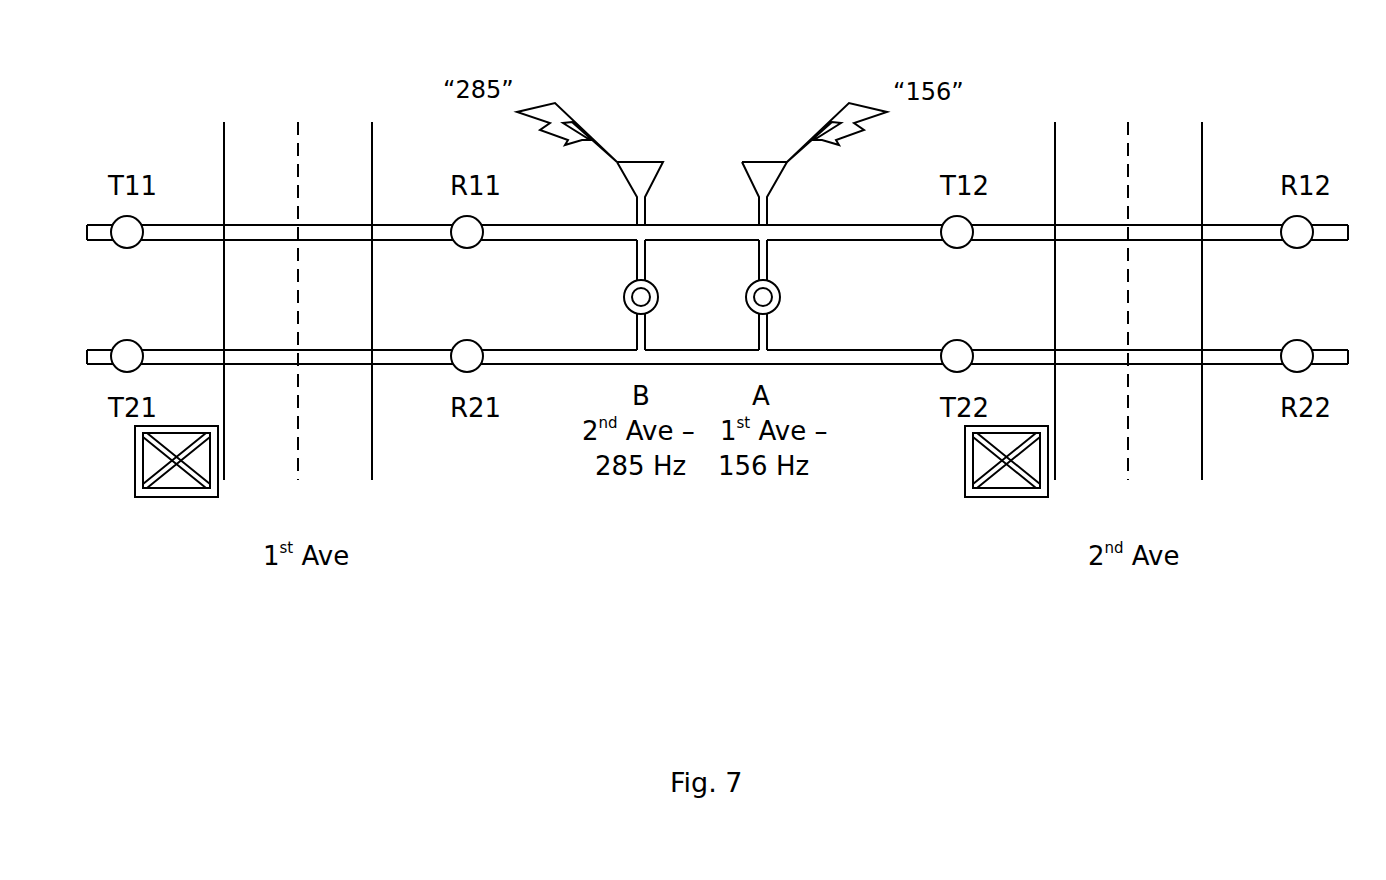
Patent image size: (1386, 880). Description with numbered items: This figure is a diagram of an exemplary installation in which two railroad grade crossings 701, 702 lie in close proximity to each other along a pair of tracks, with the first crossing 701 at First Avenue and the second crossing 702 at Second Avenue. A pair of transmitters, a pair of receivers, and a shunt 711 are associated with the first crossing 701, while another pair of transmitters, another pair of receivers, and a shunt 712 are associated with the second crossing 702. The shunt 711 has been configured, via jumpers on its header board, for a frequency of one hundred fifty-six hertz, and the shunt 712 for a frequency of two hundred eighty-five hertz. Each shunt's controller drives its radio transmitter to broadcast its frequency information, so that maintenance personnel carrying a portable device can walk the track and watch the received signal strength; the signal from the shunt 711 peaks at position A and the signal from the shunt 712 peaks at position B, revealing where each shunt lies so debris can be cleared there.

The grade crossing 701 is at (290, 119).
The grade crossing 702 is at (1137, 121).
The shunt 711 is at (782, 293).
The shunt 712 is at (622, 302).